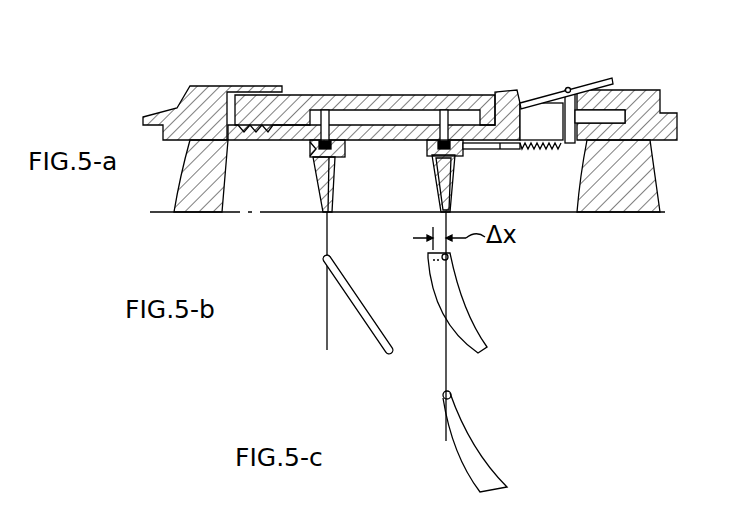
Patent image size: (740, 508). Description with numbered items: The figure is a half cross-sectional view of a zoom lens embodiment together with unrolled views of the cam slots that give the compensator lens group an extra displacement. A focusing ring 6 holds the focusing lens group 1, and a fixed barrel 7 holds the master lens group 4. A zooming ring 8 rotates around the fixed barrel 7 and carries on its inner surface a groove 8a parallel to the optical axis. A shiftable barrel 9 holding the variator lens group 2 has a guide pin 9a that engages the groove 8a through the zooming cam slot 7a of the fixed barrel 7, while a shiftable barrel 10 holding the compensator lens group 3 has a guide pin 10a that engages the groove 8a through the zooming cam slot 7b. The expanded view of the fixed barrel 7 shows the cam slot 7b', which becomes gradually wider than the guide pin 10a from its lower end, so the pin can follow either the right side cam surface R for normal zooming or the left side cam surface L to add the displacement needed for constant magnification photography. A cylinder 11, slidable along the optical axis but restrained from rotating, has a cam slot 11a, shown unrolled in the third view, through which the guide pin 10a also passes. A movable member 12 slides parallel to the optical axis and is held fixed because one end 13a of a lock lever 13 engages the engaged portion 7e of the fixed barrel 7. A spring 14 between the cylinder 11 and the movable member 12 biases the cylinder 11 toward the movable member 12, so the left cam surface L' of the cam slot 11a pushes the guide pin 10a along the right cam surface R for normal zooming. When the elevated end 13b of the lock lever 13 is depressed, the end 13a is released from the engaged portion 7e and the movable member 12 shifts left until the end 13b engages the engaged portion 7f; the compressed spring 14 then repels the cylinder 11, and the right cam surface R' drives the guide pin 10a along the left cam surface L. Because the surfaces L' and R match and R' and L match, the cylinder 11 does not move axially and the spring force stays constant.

In FIG. 5A, the focusing lens group 1 is at (204, 199).
In FIG. 5A, the variator lens group 2 is at (333, 191).
In FIG. 5A, the compensator lens group 3 is at (452, 196).
In FIG. 5A, the master lens group 4 is at (623, 206).
In FIG. 5A, the focusing ring 6 is at (214, 86).
In FIG. 5A, the fixed barrel 7 is at (662, 96).
In FIG. 5A, the zooming cam slot 7a is at (342, 143).
In FIG. 5B, the zooming cam slot 7a is at (350, 312).
In FIG. 5A, the zooming cam slot 7b is at (426, 159).
In FIG. 5B, the cam slot for the compensator lens group 7b' is at (485, 306).
In FIG. 5A, the engaged portion 7e is at (517, 100).
In FIG. 5A, the engaged portion 7f is at (630, 95).
In FIG. 5A, the zooming ring 8 is at (400, 96).
In FIG. 5A, the groove 8a is at (362, 101).
In FIG. 5A, the shiftable barrel 9 is at (311, 152).
In FIG. 5A, the guide pin 9a is at (322, 112).
In FIG. 5B, the guide pin 9a is at (324, 256).
In FIG. 5A, the shiftable barrel 10 is at (436, 158).
In FIG. 5A, the guide pin 10a is at (450, 112).
In FIG. 5B, the guide pin 10a is at (453, 260).
In FIG. 5C, the guide pin 10a is at (451, 393).
In FIG. 5A, the cylinder 11 is at (503, 150).
In FIG. 5A, the cam slot 11a is at (460, 143).
In FIG. 5C, the cam slot 11a is at (502, 478).
In FIG. 5A, the movable member 12 is at (566, 116).
In FIG. 5A, the lock lever 13 is at (560, 90).
In FIG. 5A, the end of lock lever 13a is at (523, 102).
In FIG. 5A, the elevated end of lock lever 13b is at (598, 84).
In FIG. 5A, the spring 14 is at (540, 149).
In FIG. 5B, the left side cam surface L is at (430, 310).
In FIG. 5B, the right side cam surface R is at (482, 310).
In FIG. 5C, the left cam surface L' is at (433, 452).
In FIG. 5C, the right cam surface R' is at (491, 432).